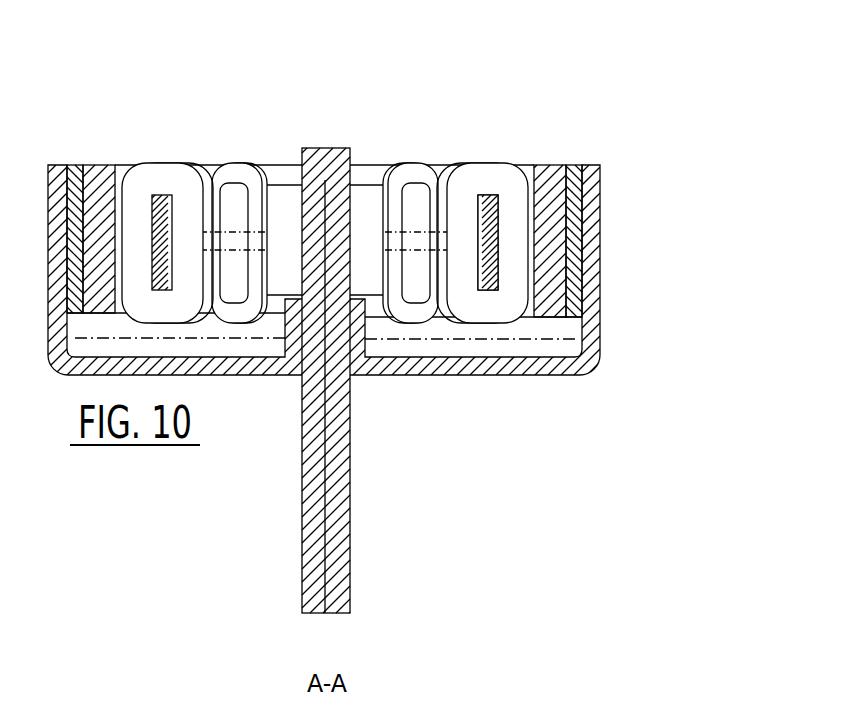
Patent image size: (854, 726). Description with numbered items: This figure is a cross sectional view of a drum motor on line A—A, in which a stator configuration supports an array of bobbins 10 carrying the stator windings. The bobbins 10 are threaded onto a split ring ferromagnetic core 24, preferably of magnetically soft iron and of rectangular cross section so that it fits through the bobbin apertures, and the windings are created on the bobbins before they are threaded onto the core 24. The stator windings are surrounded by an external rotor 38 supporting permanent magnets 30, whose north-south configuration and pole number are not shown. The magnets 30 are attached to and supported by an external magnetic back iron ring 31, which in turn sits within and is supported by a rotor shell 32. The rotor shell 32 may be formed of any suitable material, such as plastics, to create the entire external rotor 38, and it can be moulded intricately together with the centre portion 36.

The bobbin 10 is at (483, 163).
The ferromagnetic core 24 is at (482, 192).
The permanent magnet 30 is at (550, 165).
The external magnetic back iron ring 31 is at (578, 166).
The rotor shell 32 is at (604, 205).
The centre portion 36 is at (325, 148).
The external rotor 38 is at (612, 320).